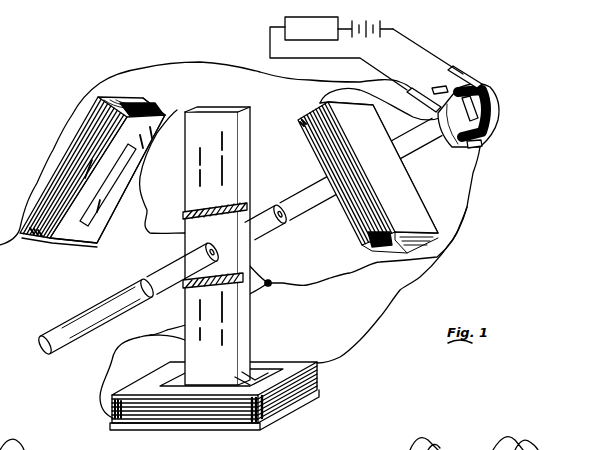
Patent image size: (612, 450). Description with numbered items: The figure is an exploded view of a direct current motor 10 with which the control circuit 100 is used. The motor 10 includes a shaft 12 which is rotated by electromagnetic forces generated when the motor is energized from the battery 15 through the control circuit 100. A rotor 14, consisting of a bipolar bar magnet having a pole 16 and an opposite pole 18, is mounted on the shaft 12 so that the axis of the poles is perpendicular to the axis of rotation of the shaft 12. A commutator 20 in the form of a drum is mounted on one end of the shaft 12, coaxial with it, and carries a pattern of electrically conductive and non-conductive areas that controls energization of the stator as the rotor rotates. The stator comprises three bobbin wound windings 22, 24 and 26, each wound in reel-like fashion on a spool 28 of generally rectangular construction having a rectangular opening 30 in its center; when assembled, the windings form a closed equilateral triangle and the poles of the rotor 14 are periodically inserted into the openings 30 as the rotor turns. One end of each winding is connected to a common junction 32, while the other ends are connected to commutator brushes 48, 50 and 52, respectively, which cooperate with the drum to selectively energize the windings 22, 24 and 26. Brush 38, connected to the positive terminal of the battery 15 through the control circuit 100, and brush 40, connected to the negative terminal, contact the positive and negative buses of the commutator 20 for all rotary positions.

The direct current motor 10 is at (526, 224).
The shaft 12 is at (80, 317).
The rotor 14 is at (188, 196).
The battery 15 is at (410, 40).
The pole 16 is at (223, 112).
The opposite pole 18 is at (214, 406).
The commutator 20 is at (506, 124).
The stator winding 22 is at (63, 173).
The stator winding 24 is at (360, 237).
The stator winding 26 is at (318, 383).
The spool 28 is at (122, 100).
The rectangular opening 30 is at (398, 196).
The common junction 32 is at (270, 282).
The brush 38 is at (412, 88).
The brush 40 is at (460, 70).
The commutator brush 48 is at (440, 87).
The commutator brush 50 is at (480, 110).
The commutator brush 52 is at (481, 143).
The control circuit 100 is at (285, 20).